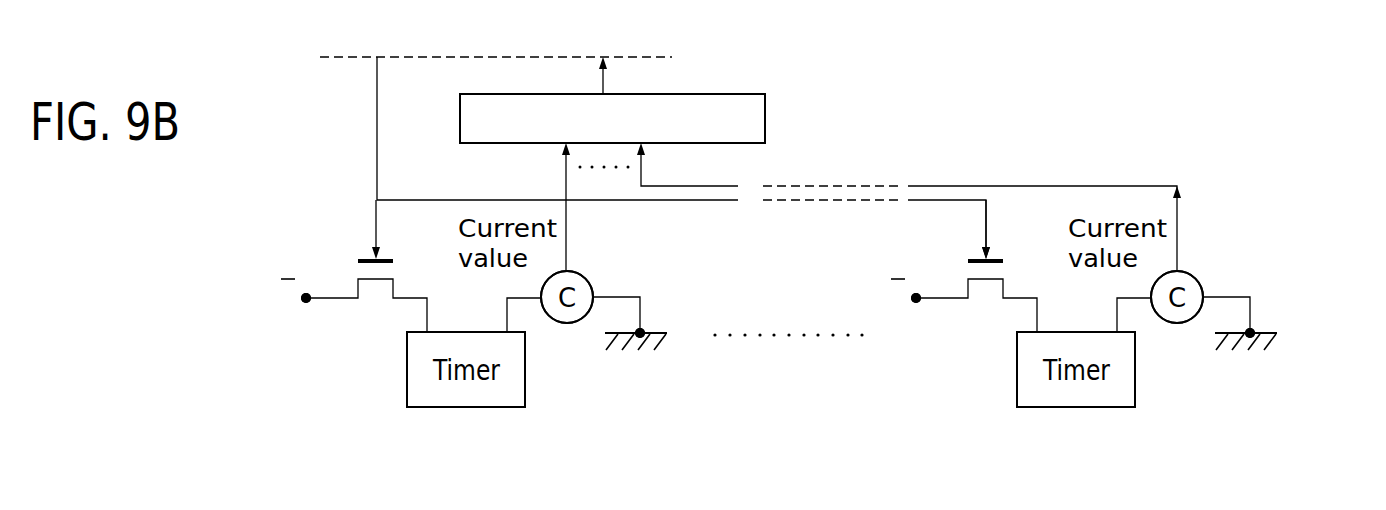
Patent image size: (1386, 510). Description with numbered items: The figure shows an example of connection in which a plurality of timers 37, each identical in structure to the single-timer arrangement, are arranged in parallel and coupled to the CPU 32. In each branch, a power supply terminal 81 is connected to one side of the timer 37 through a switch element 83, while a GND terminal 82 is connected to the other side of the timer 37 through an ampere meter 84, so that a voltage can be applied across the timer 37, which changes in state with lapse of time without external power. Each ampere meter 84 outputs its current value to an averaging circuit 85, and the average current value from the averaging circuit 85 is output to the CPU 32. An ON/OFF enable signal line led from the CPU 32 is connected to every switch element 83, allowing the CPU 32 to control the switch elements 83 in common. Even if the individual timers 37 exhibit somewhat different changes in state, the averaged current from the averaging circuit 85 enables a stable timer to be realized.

The CPU 32 is at (496, 41).
The averaging circuit 85 is at (765, 108).
The power supply terminal 81 is at (303, 304).
The switch element 83 is at (350, 263).
The timer for counting 37 is at (432, 408).
The ampere meter 84 is at (589, 281).
The GND terminal 82 is at (652, 322).